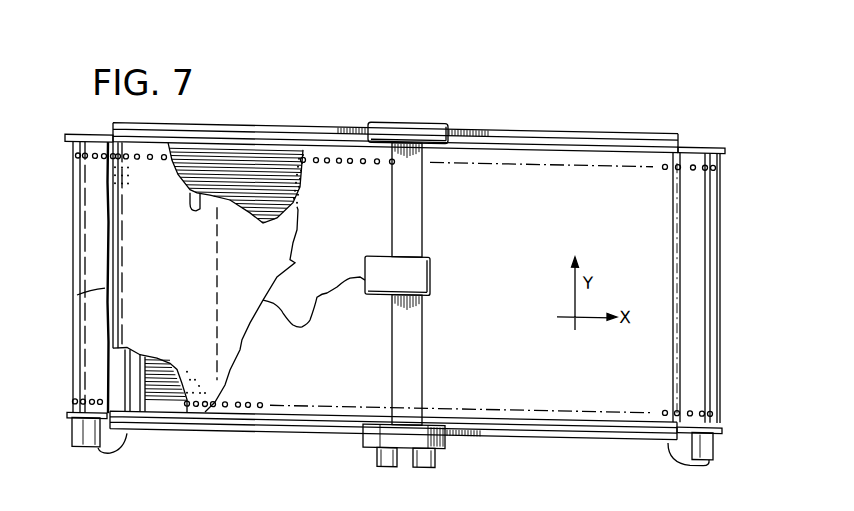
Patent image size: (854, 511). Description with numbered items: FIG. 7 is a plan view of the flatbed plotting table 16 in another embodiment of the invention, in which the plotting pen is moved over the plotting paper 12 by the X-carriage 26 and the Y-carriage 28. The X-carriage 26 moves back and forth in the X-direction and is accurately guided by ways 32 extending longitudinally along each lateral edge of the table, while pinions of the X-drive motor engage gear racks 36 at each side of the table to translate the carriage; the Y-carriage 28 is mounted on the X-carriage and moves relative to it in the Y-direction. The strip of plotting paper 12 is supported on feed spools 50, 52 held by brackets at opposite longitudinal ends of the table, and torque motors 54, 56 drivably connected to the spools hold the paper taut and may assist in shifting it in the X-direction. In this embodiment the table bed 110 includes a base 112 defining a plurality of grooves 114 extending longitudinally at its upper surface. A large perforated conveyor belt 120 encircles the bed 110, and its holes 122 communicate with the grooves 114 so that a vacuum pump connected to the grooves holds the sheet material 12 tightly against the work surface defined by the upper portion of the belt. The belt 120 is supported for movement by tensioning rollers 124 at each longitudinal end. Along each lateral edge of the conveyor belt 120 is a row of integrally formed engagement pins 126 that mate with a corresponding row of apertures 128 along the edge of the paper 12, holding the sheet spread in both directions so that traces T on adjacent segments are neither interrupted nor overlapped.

The plotting paper 12 is at (293, 257).
The flatbed plotting table 16 is at (543, 436).
The X-carriage 26 is at (413, 320).
The Y-carriage 28 is at (423, 259).
The ways 32 is at (587, 132).
The gear racks 36 is at (482, 126).
The feed spool 50 is at (70, 409).
The feed spool 52 is at (722, 413).
The torque motor 54 is at (72, 442).
The torque motor 56 is at (718, 439).
The table bed 110 is at (248, 155).
The base 112 is at (168, 399).
The grooves 114 is at (190, 204).
The conveyor belt 120 is at (127, 260).
The perforations 122 is at (197, 379).
The tensioning rollers 124 is at (118, 373).
The engagement pins 126 is at (163, 157).
The apertures 128 is at (85, 157).
The traces T is at (313, 311).